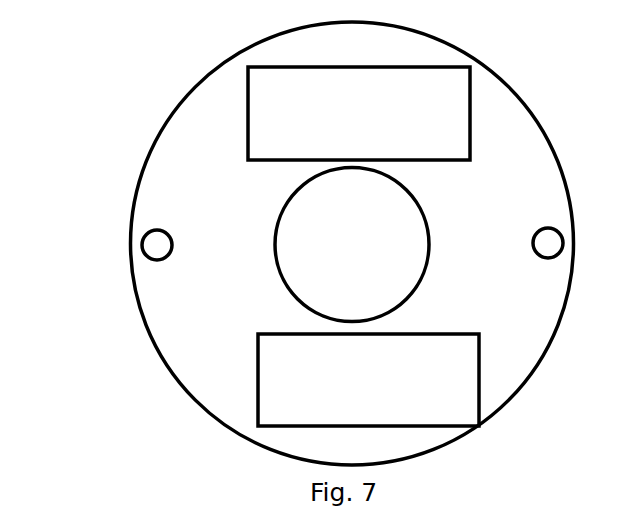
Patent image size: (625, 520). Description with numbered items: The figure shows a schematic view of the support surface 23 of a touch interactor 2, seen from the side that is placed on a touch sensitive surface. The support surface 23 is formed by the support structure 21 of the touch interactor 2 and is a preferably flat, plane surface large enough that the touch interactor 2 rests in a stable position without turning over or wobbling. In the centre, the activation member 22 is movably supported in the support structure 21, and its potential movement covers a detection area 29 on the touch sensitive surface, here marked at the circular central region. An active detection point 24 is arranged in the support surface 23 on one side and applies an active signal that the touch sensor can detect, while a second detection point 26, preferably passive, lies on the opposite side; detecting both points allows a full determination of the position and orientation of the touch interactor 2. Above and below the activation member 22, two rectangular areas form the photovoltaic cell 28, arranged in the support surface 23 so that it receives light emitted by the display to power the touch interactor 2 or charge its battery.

The touch interactor 2 is at (108, 138).
The support structure 21 is at (213, 197).
The activation member 22 is at (352, 245).
The detection area 29 is at (391, 256).
The support surface 23 is at (188, 359).
The active detection point 24 is at (150, 253).
The second detection point 26 is at (538, 253).
The photovoltaic cell 28 is at (360, 122).